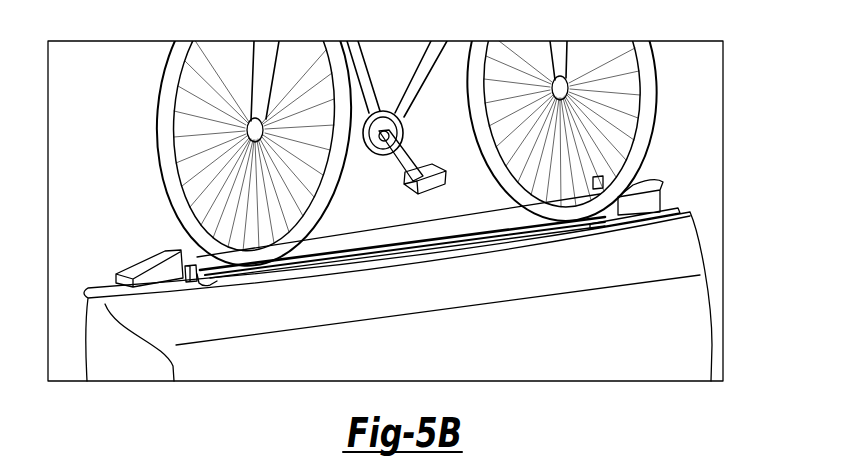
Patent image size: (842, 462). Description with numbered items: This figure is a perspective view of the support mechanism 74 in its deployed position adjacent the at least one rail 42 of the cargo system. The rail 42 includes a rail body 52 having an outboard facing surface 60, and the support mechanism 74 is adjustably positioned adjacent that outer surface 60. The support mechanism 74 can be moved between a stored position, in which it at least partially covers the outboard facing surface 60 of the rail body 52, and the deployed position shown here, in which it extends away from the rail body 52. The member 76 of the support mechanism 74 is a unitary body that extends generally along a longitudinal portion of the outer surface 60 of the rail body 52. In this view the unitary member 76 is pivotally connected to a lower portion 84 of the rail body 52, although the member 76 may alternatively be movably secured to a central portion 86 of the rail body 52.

The rail 42 is at (136, 257).
The rail body 52 is at (618, 215).
The outboard facing surface 60 is at (568, 199).
The support mechanism 74 is at (415, 238).
The member 76 is at (502, 240).
The lower portion 84 is at (196, 284).
The central portion 86 is at (187, 283).